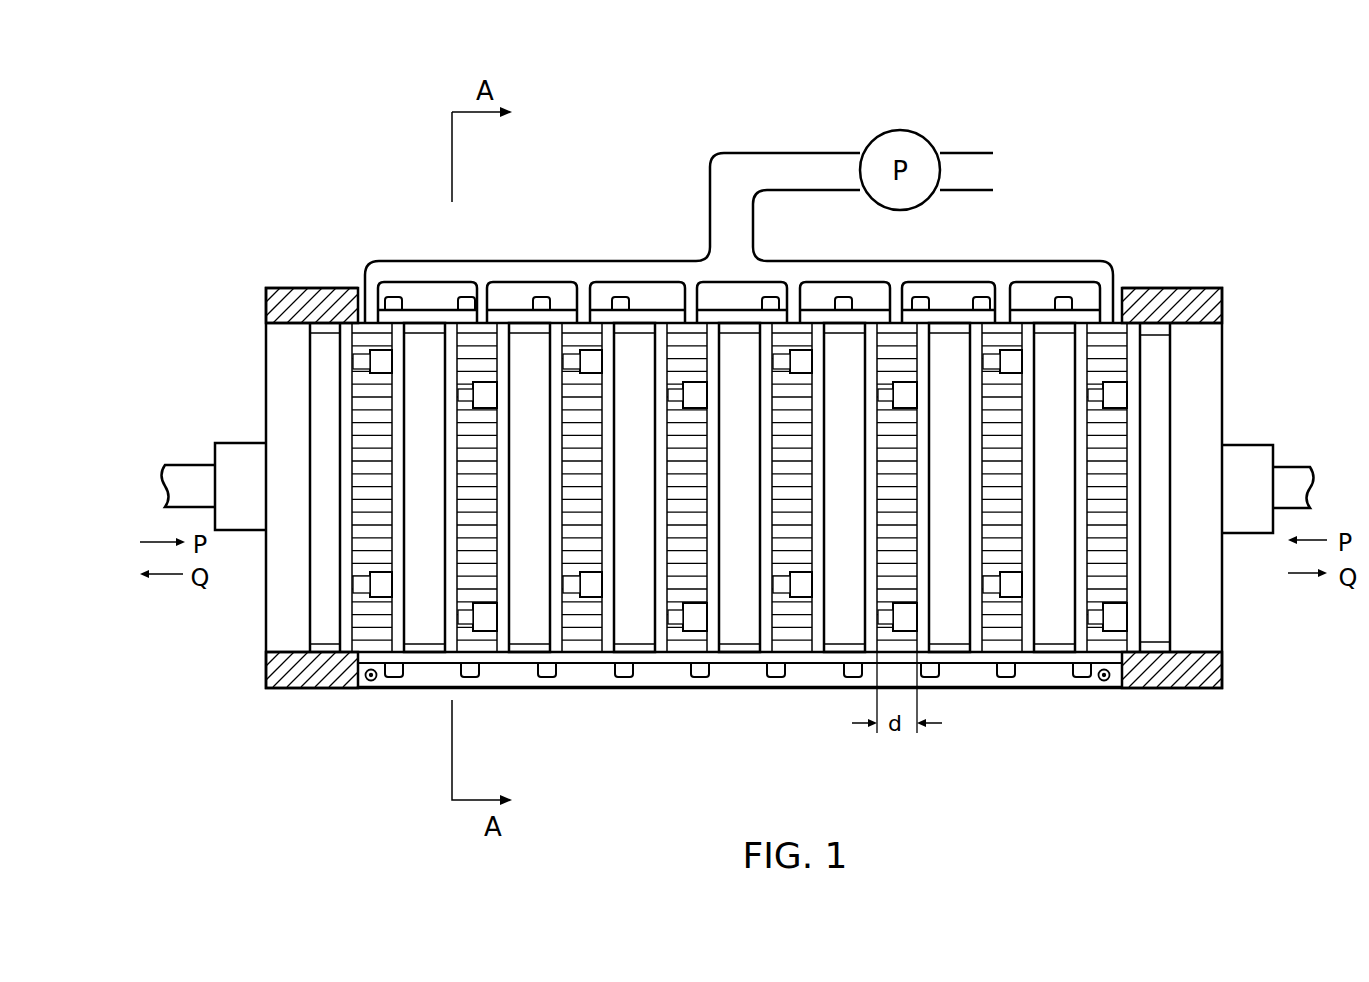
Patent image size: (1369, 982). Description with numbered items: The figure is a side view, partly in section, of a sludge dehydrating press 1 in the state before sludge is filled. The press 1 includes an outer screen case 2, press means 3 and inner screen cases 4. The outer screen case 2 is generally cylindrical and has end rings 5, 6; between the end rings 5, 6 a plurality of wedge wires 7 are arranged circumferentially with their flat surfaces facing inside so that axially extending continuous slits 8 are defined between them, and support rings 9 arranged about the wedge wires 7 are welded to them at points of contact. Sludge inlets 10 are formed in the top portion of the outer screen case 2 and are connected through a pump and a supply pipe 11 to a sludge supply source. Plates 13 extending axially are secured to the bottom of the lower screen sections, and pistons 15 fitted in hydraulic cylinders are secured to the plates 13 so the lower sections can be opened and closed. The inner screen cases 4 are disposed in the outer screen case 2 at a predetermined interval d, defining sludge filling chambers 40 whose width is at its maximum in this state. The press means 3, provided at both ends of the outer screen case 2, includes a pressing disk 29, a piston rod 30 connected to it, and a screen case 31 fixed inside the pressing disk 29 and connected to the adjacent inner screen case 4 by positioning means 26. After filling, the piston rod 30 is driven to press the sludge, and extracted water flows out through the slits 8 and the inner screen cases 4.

The sludge dehydrating press 1 is at (1146, 140).
The outer screen case 2 is at (808, 665).
The press means 3 is at (185, 404).
The inner screen case 4 is at (641, 355).
The end ring 5 is at (310, 290).
The end ring 6 is at (1172, 295).
The wedge wire 7 is at (687, 545).
The slit 8 is at (688, 472).
The support ring 9 is at (543, 300).
The sludge inlet 10 is at (1003, 318).
The supply pipe 11 is at (585, 265).
The plate 13 is at (953, 682).
The piston 15 is at (371, 681).
The positioning means 26 is at (483, 388).
The pressing disk 29 is at (282, 412).
The piston rod 30 is at (177, 475).
The screen case 31 is at (323, 368).
The sludge filling chamber 40 is at (900, 490).